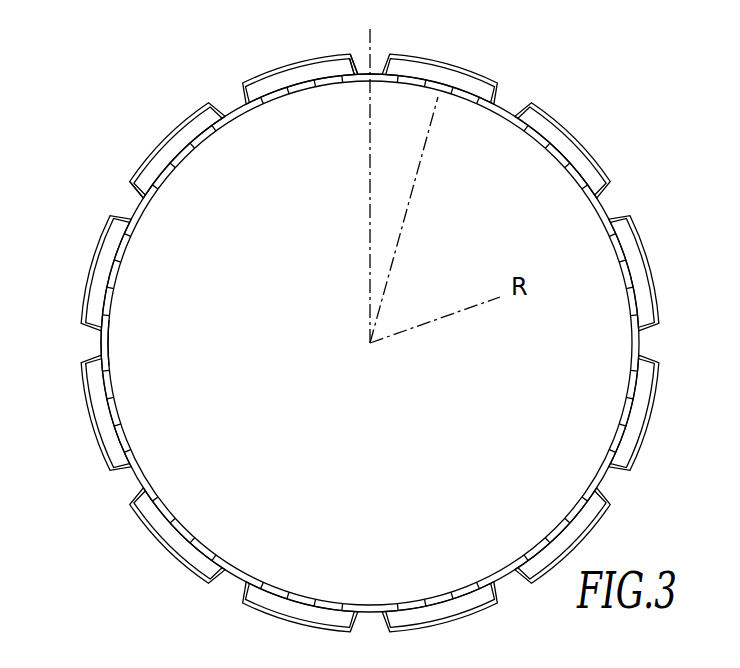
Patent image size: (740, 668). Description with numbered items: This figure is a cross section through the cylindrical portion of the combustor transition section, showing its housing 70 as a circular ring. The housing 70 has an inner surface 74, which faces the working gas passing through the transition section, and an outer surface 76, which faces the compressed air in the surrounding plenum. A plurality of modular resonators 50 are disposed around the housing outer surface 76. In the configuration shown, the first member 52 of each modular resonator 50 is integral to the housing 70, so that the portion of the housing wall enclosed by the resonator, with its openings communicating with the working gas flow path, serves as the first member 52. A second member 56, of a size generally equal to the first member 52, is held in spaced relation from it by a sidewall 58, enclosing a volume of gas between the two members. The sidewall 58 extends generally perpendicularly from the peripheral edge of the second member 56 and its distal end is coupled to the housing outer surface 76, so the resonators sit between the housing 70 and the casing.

The modular resonator 50 is at (264, 72).
The first member 52 is at (311, 90).
The second member 56 is at (334, 56).
The sidewall 58 is at (367, 59).
The housing 70 is at (138, 203).
The inner surface 74 is at (112, 332).
The outer surface 76 is at (100, 342).